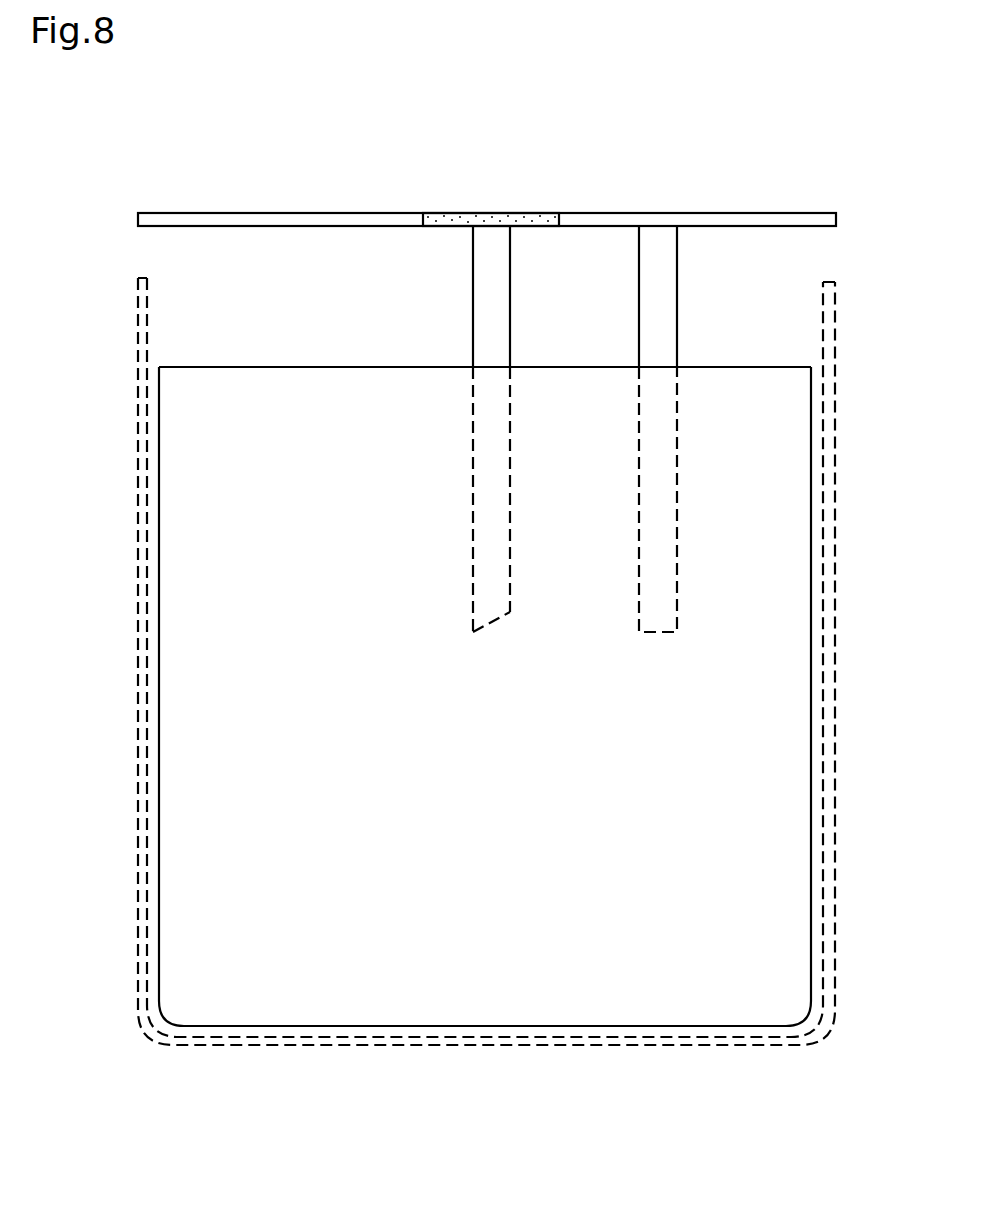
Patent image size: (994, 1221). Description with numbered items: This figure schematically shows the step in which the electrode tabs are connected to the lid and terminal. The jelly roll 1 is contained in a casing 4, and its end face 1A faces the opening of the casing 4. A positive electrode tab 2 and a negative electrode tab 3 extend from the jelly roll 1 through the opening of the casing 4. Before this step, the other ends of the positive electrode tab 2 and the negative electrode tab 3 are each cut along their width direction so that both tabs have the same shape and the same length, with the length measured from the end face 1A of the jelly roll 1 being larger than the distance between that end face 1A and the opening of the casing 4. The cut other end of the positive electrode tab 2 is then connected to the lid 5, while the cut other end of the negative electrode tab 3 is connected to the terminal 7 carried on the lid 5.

The jelly roll 1 is at (782, 674).
The end face of the jelly roll 1A is at (355, 365).
The positive electrode tab 2 is at (660, 264).
The negative electrode tab 3 is at (484, 298).
The casing 4 is at (828, 345).
The lid 5 is at (328, 212).
The terminal 7 is at (535, 222).